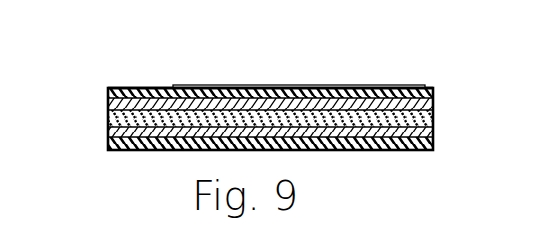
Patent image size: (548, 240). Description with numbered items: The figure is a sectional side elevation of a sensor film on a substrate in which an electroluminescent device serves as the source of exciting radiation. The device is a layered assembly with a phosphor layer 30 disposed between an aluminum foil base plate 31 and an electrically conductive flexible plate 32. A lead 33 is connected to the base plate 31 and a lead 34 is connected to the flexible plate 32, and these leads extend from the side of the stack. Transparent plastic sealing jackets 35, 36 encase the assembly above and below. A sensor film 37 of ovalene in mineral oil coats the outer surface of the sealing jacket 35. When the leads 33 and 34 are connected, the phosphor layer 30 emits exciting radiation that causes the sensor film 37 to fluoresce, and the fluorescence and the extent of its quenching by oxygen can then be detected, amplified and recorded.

The phosphor layer 30 is at (278, 105).
The aluminum foil base plate 31 is at (434, 130).
The electrically conductive flexible plate 32 is at (435, 96).
The lead 33 is at (108, 131).
The lead 34 is at (108, 102).
The transparent plastic sealing jacket 35 is at (403, 88).
The transparent plastic sealing jacket 36 is at (434, 148).
The sensor film 37 is at (263, 85).